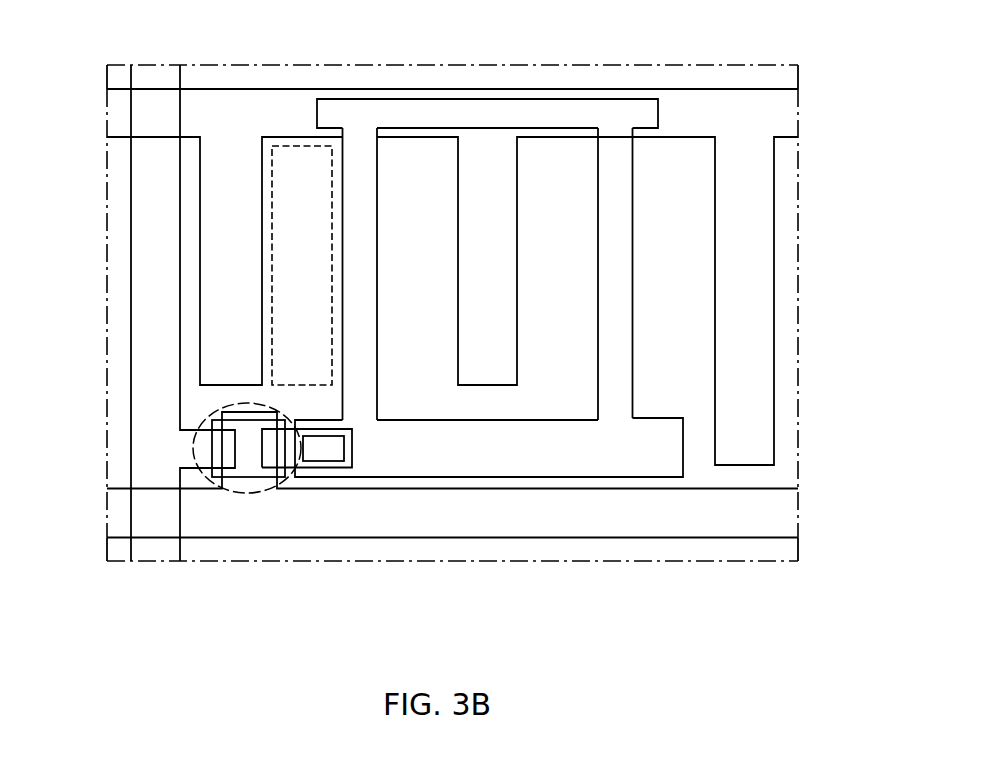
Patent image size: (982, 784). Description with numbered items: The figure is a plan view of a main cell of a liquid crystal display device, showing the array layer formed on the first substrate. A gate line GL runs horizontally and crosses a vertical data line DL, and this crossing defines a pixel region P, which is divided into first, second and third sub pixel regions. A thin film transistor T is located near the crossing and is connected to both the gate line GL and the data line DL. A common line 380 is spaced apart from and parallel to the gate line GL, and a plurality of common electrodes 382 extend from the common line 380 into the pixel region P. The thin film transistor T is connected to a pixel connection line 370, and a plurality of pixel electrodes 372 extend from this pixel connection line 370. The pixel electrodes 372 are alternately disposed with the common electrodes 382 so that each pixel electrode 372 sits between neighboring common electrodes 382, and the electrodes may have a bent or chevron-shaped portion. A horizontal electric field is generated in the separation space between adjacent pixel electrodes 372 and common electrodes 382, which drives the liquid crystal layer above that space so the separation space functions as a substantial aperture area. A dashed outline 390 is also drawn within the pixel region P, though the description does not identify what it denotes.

The pixel connection line 370 is at (552, 428).
The pixel electrodes 372 is at (362, 378).
The common line 380 is at (787, 107).
The common electrodes 382 is at (231, 185).
The storage electrode region 390 is at (270, 242).
The data line DL is at (143, 358).
The gate line GL is at (492, 522).
The thin film transistor T is at (243, 492).
The pixel region P is at (699, 470).